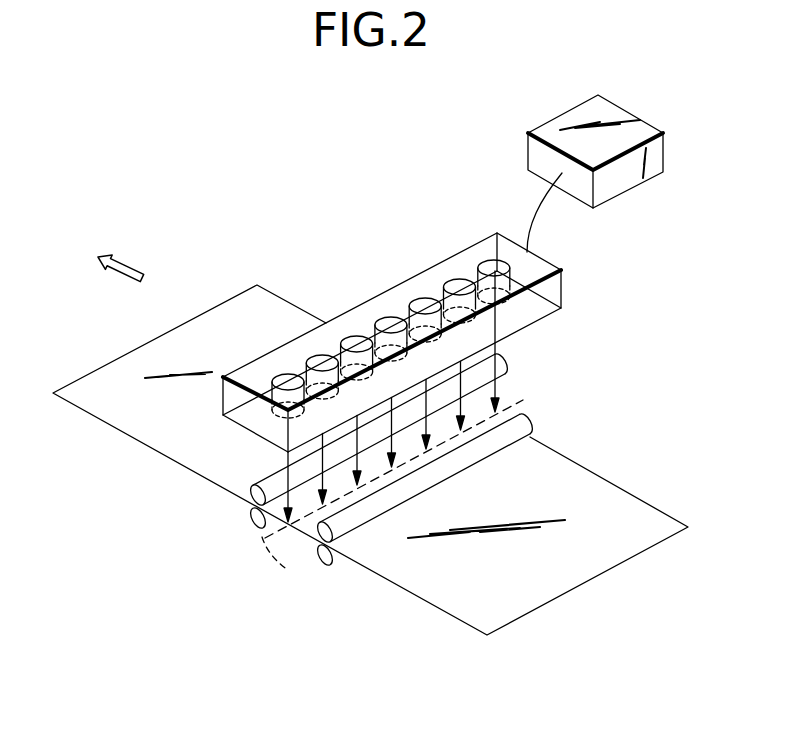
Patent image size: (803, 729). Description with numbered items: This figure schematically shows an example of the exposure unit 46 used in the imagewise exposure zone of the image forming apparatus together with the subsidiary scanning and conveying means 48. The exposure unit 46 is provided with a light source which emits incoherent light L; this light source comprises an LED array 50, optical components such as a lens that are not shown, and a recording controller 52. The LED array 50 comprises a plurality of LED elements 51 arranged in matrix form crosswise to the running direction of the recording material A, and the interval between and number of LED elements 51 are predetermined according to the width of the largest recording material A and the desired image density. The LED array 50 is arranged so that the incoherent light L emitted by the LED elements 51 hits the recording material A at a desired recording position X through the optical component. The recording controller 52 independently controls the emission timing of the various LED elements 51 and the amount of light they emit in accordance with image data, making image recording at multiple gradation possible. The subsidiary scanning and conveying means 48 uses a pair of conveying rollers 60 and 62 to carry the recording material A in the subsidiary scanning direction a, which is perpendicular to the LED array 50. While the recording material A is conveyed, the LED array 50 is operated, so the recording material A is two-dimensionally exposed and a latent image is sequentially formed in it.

The exposure unit 46 is at (477, 308).
The subsidiary scanning and conveying means 48 is at (332, 493).
The LED array 50 is at (562, 281).
The LED element 51 is at (421, 300).
The recording controller 52 is at (665, 152).
The conveying roller 60 is at (250, 523).
The conveying roller 62 is at (326, 567).
The incoherent light L is at (497, 365).
The recording material A is at (615, 492).
The recording position X is at (279, 570).
The subsidiary scanning direction a is at (138, 266).